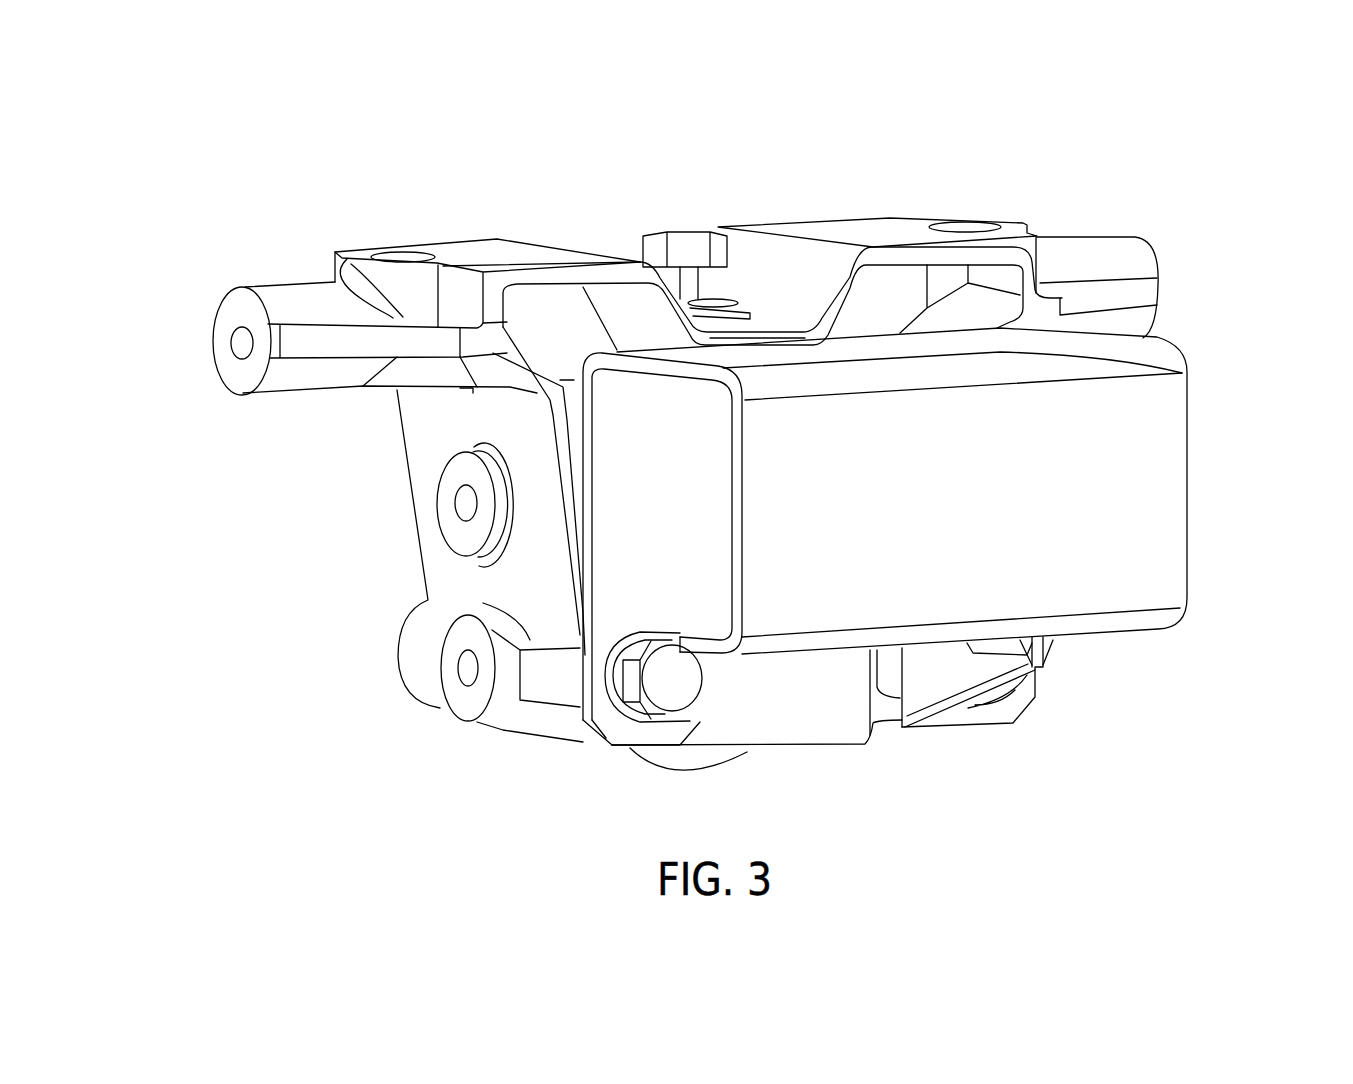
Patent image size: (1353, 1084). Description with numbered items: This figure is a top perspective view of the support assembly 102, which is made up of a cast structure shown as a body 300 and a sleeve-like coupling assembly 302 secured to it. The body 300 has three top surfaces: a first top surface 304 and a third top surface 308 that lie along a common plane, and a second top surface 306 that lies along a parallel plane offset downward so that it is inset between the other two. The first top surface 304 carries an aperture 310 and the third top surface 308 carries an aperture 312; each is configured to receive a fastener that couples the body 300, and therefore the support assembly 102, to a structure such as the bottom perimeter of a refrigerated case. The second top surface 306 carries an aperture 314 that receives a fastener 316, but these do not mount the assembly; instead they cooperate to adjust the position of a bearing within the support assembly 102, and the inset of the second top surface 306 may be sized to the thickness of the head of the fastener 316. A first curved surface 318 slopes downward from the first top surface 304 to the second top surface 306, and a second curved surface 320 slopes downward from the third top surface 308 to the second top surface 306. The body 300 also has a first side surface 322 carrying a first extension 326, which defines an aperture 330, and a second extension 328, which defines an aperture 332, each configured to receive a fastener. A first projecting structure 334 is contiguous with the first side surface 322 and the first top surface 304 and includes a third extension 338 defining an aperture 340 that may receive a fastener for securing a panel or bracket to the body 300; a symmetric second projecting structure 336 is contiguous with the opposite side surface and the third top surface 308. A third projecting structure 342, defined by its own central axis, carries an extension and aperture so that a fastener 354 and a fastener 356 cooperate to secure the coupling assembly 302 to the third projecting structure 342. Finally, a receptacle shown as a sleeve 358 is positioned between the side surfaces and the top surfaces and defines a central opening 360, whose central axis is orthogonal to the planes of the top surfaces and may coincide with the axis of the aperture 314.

The support assembly 102 is at (1037, 145).
The body 300 is at (453, 232).
The coupling assembly 302 is at (1206, 562).
The first top surface 304 is at (517, 248).
The second top surface 306 is at (771, 326).
The third top surface 308 is at (880, 236).
The aperture 310 is at (388, 252).
The aperture 312 is at (975, 222).
The aperture 314 is at (740, 308).
The fastener 316 is at (665, 233).
The first curved surface 318 is at (684, 298).
The second curved surface 320 is at (806, 270).
The first side surface 322 is at (443, 577).
The first extension 326 is at (447, 466).
The second extension 328 is at (470, 627).
The aperture 330 is at (460, 503).
The aperture 332 is at (465, 668).
The first projecting structure 334 is at (283, 292).
The second projecting structure 336 is at (1072, 248).
The third extension 338 is at (228, 308).
The aperture 340 is at (240, 344).
The third projecting structure 342 is at (567, 692).
The fastener 354 is at (688, 690).
The fastener 356 is at (1028, 700).
The sleeve 358 is at (830, 695).
The central opening 360 is at (810, 752).